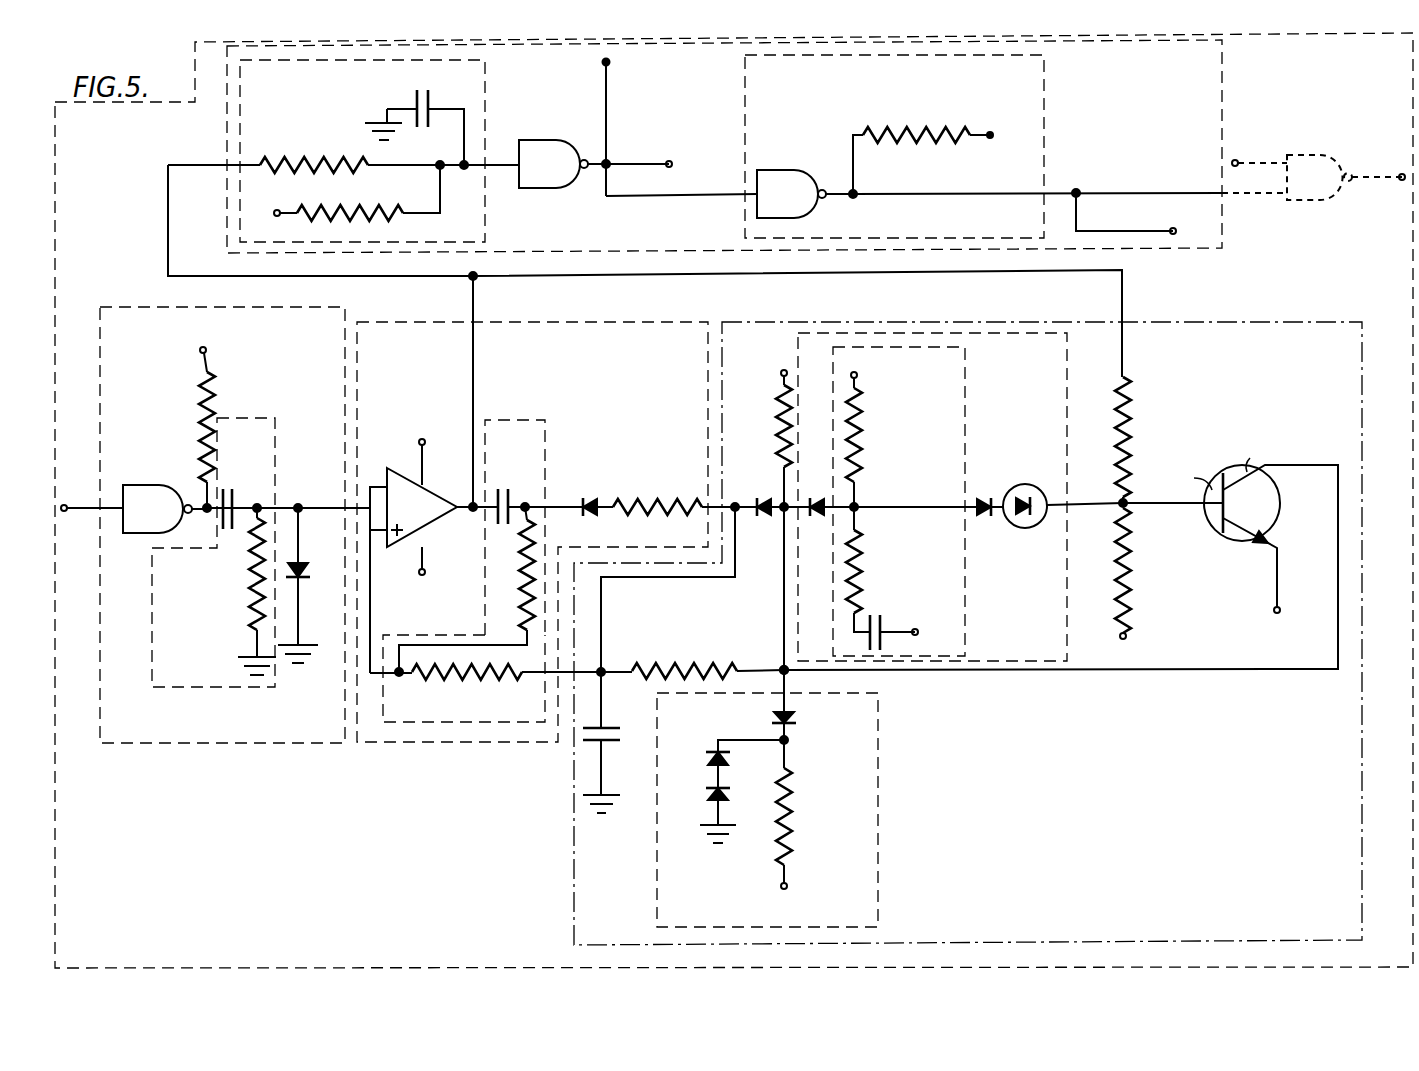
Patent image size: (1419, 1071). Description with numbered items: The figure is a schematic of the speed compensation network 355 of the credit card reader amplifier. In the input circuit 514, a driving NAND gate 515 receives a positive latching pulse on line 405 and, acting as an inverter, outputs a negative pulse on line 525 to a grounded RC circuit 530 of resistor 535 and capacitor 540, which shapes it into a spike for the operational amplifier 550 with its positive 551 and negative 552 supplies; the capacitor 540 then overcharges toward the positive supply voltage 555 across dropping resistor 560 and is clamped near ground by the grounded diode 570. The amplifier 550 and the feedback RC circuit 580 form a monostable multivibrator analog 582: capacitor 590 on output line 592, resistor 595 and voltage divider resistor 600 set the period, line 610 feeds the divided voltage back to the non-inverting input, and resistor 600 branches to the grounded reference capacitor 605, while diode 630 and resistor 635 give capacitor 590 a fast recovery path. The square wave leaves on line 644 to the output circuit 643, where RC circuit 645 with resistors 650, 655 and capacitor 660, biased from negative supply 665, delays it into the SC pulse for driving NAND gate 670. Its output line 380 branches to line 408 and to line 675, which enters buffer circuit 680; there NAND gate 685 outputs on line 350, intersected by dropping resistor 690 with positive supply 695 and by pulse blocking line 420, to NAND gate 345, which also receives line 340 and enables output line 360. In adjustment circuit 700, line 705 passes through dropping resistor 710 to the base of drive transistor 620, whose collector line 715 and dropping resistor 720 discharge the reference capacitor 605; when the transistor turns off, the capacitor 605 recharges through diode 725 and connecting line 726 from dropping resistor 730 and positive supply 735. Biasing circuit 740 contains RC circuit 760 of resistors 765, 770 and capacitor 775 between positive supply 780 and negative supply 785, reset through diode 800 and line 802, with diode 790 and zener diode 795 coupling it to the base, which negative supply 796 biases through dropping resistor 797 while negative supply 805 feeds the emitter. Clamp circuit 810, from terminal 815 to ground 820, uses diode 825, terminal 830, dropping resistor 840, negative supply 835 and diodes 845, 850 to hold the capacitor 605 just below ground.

The speed compensation network 355 is at (55, 908).
The output circuit 643 is at (225, 108).
The line 644 is at (432, 279).
The RC circuit 645 is at (240, 92).
The resistor 650 is at (326, 157).
The resistor 655 is at (364, 205).
The capacitor 660 is at (420, 90).
The negative voltage supply 665 is at (275, 210).
The driving NAND gate 670 is at (562, 178).
The output line 380 is at (620, 166).
The line 408 is at (605, 82).
The line 675 is at (642, 197).
The buffer circuit 680 is at (744, 217).
The driving NAND gate 685 is at (799, 208).
The dropping resistor 690 is at (898, 128).
The positive voltage supply 695 is at (990, 133).
The output line 350 is at (1088, 190).
The pulse blocking line 420 is at (1150, 230).
The line 340 is at (1250, 160).
The NAND gate 345 is at (1320, 155).
The output line 360 is at (1398, 183).
The line 705 is at (668, 279).
The input circuit 514 is at (188, 745).
The line 405 is at (80, 505).
The driving NAND gate 515 is at (165, 523).
The positive supply voltage 555 is at (201, 353).
The dropping resistor 560 is at (200, 438).
The grounded RC circuit 530 is at (222, 418).
The capacitor 540 is at (233, 488).
The resistor 535 is at (250, 580).
The grounded diode 570 is at (303, 566).
The line 525 is at (332, 506).
The monostable multivibrator analog 582 is at (395, 744).
The operational amplifier 550 is at (410, 486).
The positive voltage supply 551 is at (425, 445).
The negative voltage supply 552 is at (420, 571).
The line 592 is at (458, 512).
The capacitor 590 is at (505, 530).
The RC circuit 580 is at (535, 425).
The line 610 is at (371, 619).
The resistor 595 is at (520, 596).
The voltage divider resistor 600 is at (462, 678).
The grounded reference capacitor 605 is at (621, 733).
The connecting line 726 is at (678, 578).
The dropping resistor 720 is at (710, 660).
The diode 630 is at (590, 497).
The resistor 635 is at (640, 500).
The adjustment circuit 700 is at (1245, 323).
The diode 725 is at (774, 476).
The dropping resistor 730 is at (778, 398).
The positive power supply 735 is at (781, 373).
The line 802 is at (784, 588).
The diode 800 is at (812, 517).
The biasing circuit 740 is at (1062, 390).
The RC circuit 760 is at (962, 390).
The resistor 765 is at (862, 470).
The positive power supply 780 is at (858, 374).
The resistor 770 is at (862, 556).
The capacitor 775 is at (876, 612).
The negative power supply 785 is at (914, 629).
The diode 790 is at (988, 518).
The zener diode 795 is at (1035, 528).
The dropping resistor 710 is at (1118, 425).
The dropping resistor 797 is at (1130, 583).
The negative voltage supply 796 is at (1121, 633).
The drive transistor 620 is at (1218, 530).
The line 715 is at (1316, 463).
The negative power supply 805 is at (1280, 608).
The clamp circuit 810 is at (882, 918).
The terminal 815 is at (781, 666).
The diode 825 is at (798, 720).
The terminal 830 is at (795, 745).
The diode 845 is at (710, 758).
The diode 850 is at (712, 790).
The ground 820 is at (730, 847).
The dropping resistor 840 is at (794, 827).
The negative power supply 835 is at (790, 886).